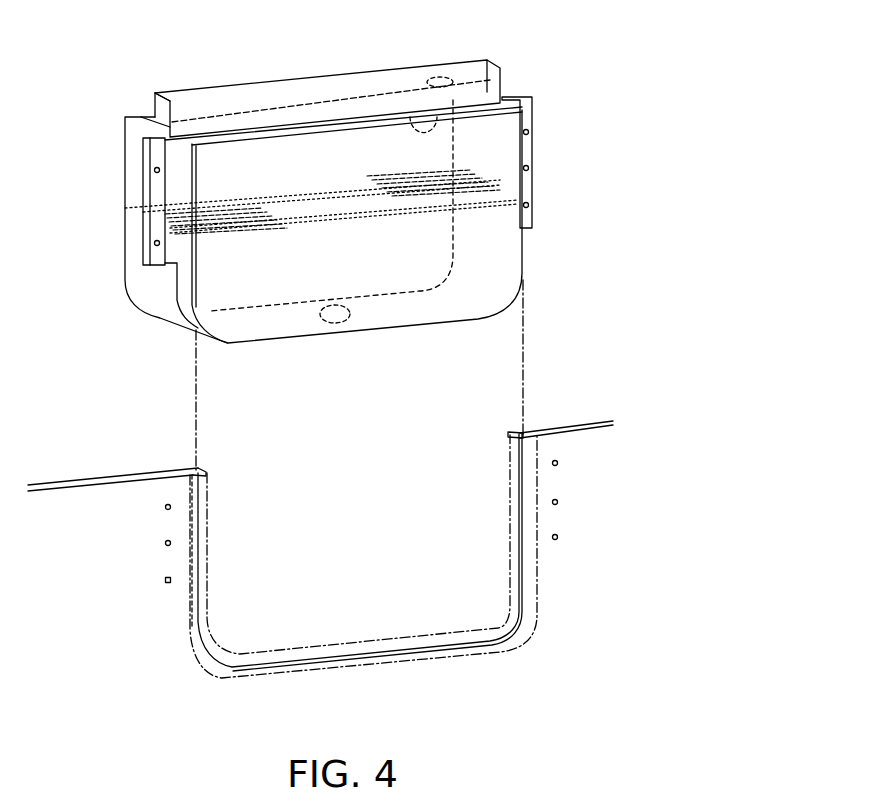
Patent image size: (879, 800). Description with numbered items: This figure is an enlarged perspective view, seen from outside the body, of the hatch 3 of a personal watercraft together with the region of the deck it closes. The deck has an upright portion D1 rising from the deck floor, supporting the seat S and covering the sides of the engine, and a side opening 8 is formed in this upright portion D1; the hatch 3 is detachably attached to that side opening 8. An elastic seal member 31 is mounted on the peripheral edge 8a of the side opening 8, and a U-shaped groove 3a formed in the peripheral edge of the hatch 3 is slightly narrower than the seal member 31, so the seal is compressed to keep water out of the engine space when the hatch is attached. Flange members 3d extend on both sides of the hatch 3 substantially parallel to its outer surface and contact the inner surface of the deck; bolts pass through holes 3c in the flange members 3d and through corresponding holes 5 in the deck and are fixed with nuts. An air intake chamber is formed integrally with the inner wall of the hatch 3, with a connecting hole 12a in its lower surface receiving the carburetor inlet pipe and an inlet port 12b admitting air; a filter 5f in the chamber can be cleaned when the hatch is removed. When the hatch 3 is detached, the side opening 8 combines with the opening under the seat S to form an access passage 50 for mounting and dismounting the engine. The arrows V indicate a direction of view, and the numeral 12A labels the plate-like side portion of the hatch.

The hatch 3 is at (320, 157).
The U-shaped groove 3a is at (500, 100).
The holes 3c is at (158, 243).
The flange members 3d is at (150, 157).
The side plate 12A is at (128, 133).
The connecting hole 12a is at (332, 318).
The inlet port 12b is at (430, 112).
The holes 5 is at (553, 502).
The strainer plate 5f is at (270, 227).
The side opening 8 is at (337, 617).
The peripheral edge 8a is at (523, 558).
The seal member 31 is at (207, 570).
The access passage 50 is at (437, 473).
The seat S is at (168, 580).
The upright portion D1 is at (560, 615).
The direction of view V is at (197, 52).